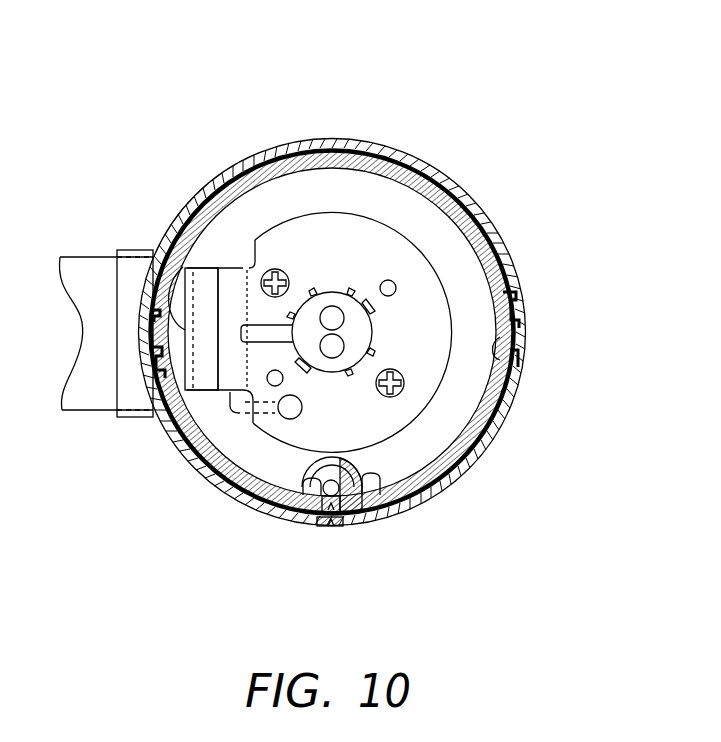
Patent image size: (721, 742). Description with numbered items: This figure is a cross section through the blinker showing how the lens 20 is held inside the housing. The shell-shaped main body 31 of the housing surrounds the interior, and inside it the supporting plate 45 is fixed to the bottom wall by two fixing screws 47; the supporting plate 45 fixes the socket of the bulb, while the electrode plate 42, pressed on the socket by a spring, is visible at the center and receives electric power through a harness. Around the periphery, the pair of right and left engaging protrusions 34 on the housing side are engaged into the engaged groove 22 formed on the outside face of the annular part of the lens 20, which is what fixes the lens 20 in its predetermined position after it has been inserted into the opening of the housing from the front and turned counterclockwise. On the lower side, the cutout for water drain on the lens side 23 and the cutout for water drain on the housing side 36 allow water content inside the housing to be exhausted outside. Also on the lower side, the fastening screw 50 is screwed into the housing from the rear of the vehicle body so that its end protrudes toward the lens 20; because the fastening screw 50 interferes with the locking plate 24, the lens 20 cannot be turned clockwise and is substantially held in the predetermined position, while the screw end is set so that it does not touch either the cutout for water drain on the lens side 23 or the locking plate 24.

The lens 20 is at (478, 207).
The main body 31 is at (506, 250).
The engaged groove 22 is at (153, 363).
The engaging protrusion 34 is at (172, 270).
The supporting plate 45 is at (320, 245).
The electrode plate 42 is at (337, 303).
The fixing screw 47 is at (262, 270).
The fastening screw 50 is at (308, 490).
The cutout for water drain on the lens side 23 is at (332, 507).
The cutout for water drain on the housing side 36 is at (341, 528).
The locking plate 24 is at (367, 465).